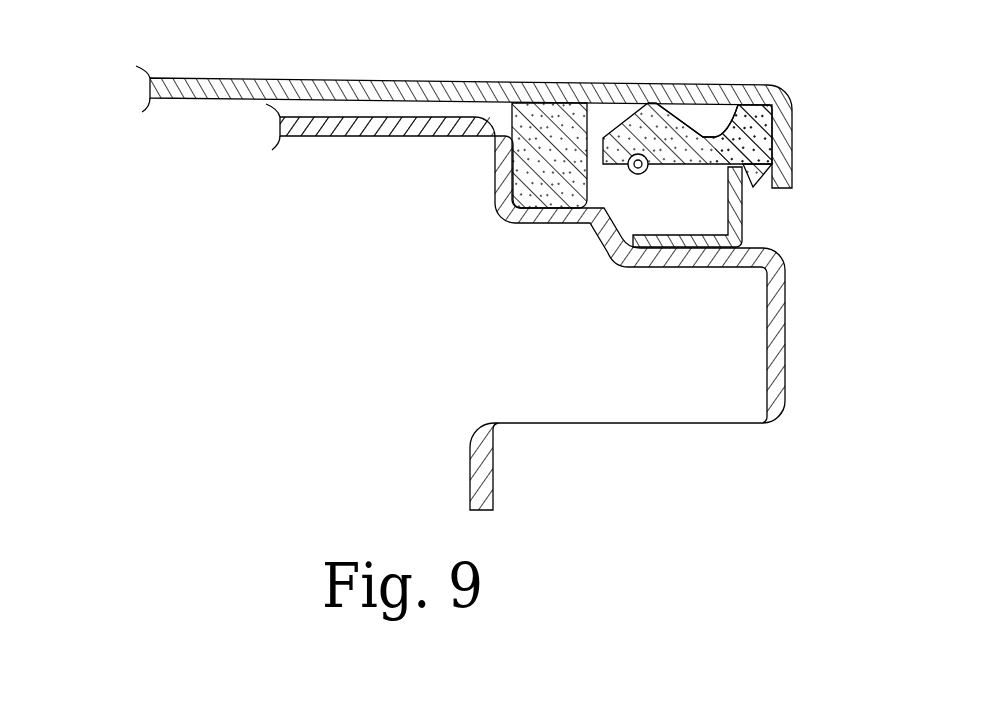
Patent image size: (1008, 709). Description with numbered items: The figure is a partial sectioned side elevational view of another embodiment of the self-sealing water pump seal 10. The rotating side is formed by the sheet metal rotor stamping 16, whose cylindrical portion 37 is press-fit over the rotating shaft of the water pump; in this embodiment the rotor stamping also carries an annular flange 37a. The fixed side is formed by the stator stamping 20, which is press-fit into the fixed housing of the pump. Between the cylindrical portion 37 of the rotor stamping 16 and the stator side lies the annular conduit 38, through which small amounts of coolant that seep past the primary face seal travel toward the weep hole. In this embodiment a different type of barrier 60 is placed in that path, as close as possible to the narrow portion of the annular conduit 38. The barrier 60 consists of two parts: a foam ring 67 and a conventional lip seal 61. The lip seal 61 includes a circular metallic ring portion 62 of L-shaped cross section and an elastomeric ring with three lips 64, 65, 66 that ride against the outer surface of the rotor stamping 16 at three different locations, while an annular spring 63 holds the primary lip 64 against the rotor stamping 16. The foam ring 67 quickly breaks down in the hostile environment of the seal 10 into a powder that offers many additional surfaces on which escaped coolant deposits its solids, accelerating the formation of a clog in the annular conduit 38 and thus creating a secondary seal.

The water pump seal 10 is at (501, 264).
The rotor stamping 16 is at (501, 100).
The stator stamping 20 is at (527, 274).
The cylindrical portion 37 is at (458, 82).
The annular flange 37a is at (793, 148).
The annular conduit 38 is at (350, 107).
The barrier 60 is at (598, 186).
The lip seal 61 is at (697, 103).
The circular metallic ring portion 62 is at (743, 213).
The annular spring 63 is at (640, 174).
The primary lip 64 is at (725, 120).
The lip 65 is at (743, 102).
The lip 66 is at (765, 182).
The foam ring 67 is at (592, 120).